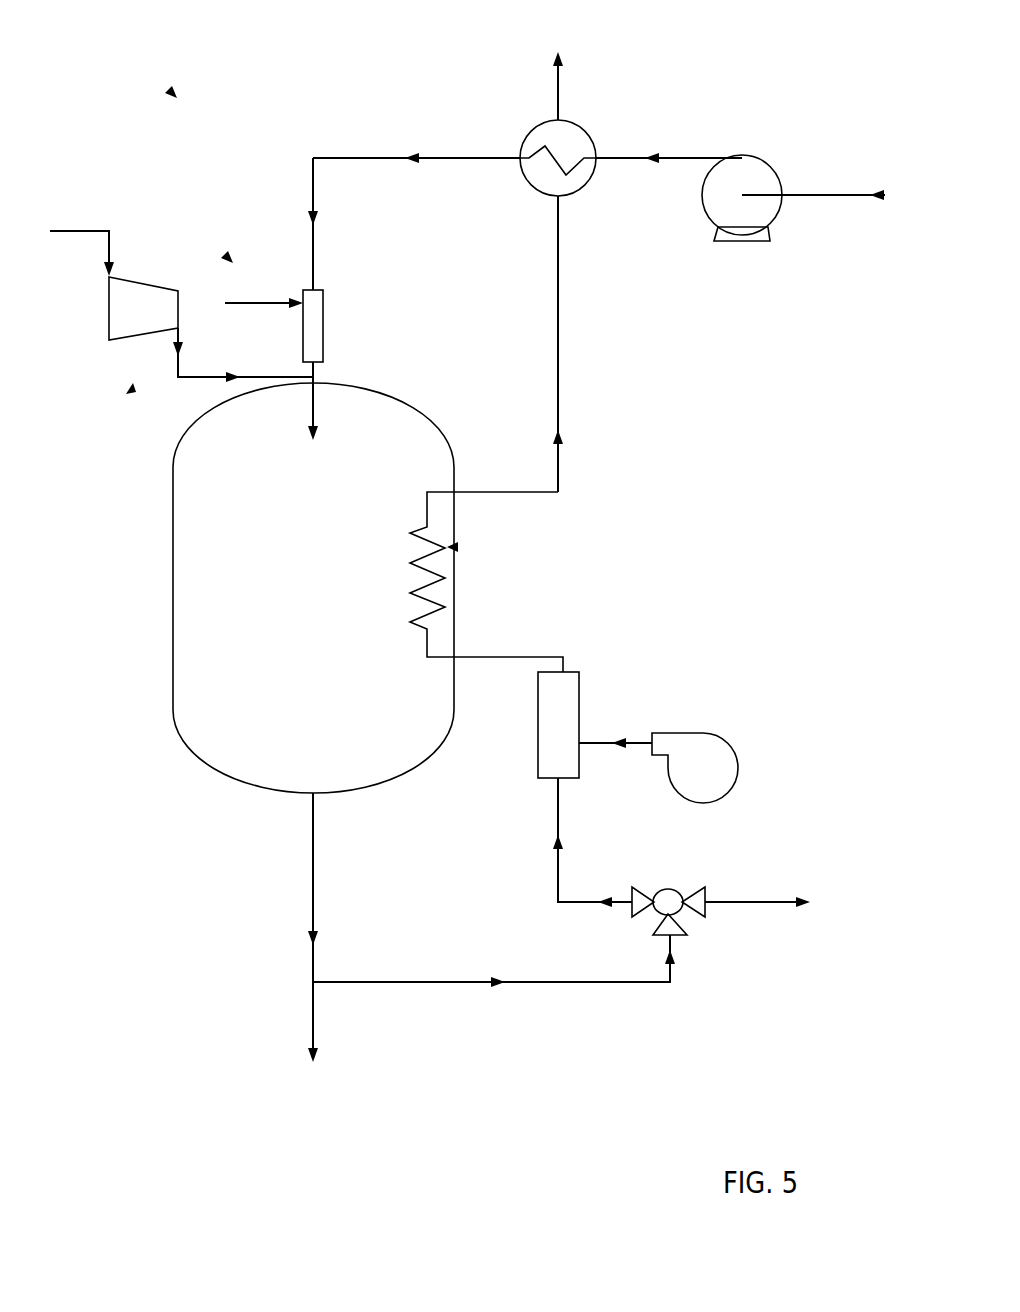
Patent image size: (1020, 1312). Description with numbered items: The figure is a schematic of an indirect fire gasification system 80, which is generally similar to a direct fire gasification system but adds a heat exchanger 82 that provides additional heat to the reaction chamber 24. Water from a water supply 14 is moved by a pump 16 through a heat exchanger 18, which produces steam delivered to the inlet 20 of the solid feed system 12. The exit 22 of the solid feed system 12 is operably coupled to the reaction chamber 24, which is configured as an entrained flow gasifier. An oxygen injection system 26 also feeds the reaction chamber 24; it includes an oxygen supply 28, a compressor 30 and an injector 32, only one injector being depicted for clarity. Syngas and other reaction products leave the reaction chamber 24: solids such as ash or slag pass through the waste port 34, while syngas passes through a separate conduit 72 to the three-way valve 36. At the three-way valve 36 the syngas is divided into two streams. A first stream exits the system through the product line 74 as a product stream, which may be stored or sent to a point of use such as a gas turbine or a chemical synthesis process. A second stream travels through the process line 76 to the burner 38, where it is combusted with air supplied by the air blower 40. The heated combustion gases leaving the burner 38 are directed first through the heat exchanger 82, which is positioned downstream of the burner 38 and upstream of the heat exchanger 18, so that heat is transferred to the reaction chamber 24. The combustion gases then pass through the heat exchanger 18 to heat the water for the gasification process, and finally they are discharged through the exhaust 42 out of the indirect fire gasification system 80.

The indirect fire gasification system 80 is at (172, 95).
The exhaust 42 is at (557, 88).
The heat exchanger 18 is at (577, 140).
The pump 16 is at (752, 178).
The water supply 14 is at (812, 198).
The oxygen supply 28 is at (74, 230).
The compressor 30 is at (129, 324).
The solid feed system 12 is at (229, 257).
The inlet 20 is at (303, 288).
The exit 22 is at (318, 377).
The injector 32 is at (200, 377).
The oxygen injection system 26 is at (130, 390).
The reaction chamber 24 is at (299, 606).
The heat exchanger 82 is at (455, 547).
The burner 38 is at (544, 739).
The air blower 40 is at (686, 781).
The three-way valve 36 is at (668, 900).
The process line 76 is at (557, 866).
The product line 74 is at (768, 905).
The conduit 72 is at (592, 982).
The waste port 34 is at (313, 1022).